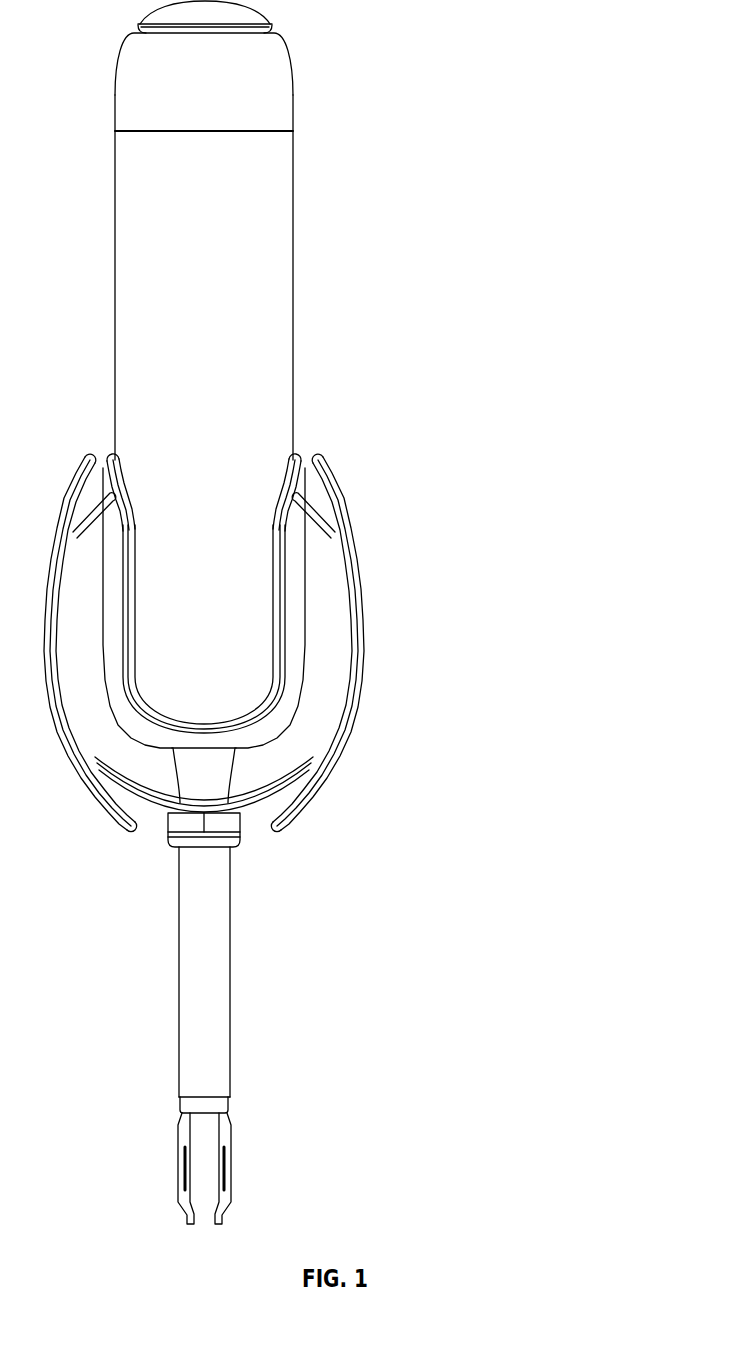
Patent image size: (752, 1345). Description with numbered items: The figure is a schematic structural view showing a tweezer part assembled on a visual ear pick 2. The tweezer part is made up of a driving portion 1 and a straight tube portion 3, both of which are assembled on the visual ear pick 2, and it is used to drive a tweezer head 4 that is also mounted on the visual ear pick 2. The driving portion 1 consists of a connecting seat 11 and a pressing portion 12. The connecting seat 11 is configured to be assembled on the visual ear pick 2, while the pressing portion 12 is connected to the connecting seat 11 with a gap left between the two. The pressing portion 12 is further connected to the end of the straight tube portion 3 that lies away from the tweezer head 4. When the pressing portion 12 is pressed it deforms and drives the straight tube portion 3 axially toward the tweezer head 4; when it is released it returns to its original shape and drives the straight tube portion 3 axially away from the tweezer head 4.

The driving portion 1 is at (330, 639).
The visual ear pick 2 is at (260, 267).
The straight tube portion 3 is at (217, 983).
The tweezer head 4 is at (233, 1153).
The connecting seat 11 is at (292, 592).
The pressing portion 12 is at (352, 660).